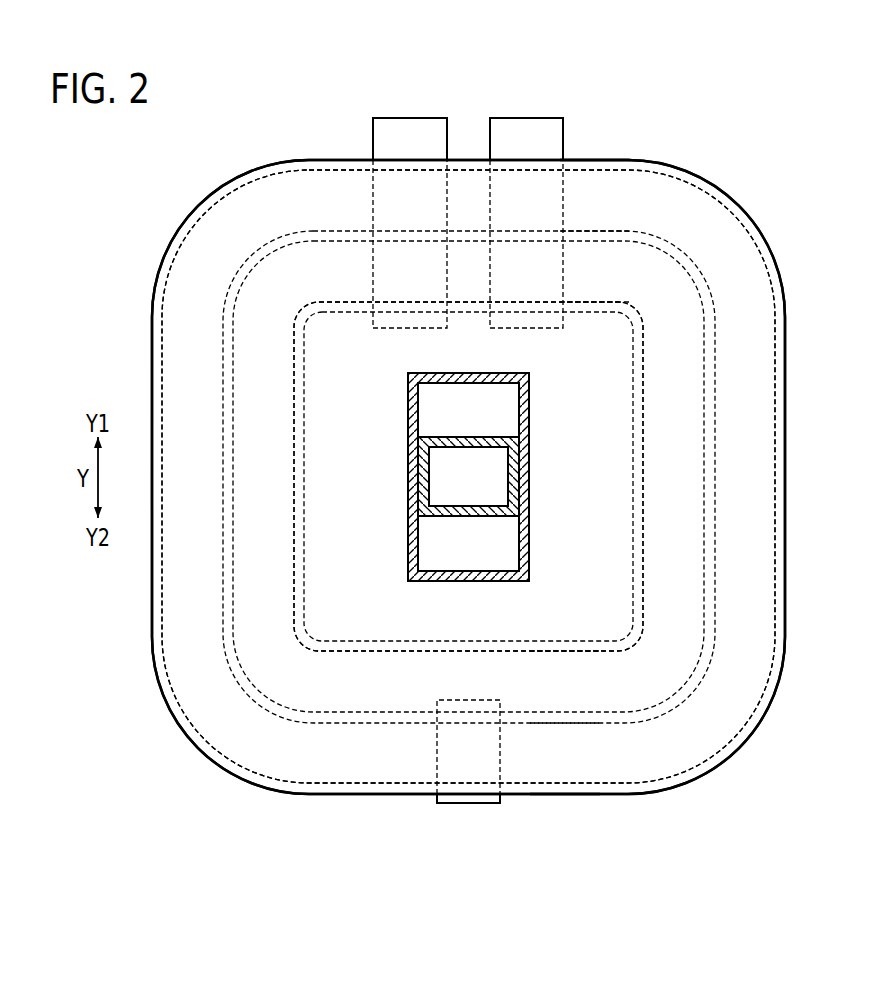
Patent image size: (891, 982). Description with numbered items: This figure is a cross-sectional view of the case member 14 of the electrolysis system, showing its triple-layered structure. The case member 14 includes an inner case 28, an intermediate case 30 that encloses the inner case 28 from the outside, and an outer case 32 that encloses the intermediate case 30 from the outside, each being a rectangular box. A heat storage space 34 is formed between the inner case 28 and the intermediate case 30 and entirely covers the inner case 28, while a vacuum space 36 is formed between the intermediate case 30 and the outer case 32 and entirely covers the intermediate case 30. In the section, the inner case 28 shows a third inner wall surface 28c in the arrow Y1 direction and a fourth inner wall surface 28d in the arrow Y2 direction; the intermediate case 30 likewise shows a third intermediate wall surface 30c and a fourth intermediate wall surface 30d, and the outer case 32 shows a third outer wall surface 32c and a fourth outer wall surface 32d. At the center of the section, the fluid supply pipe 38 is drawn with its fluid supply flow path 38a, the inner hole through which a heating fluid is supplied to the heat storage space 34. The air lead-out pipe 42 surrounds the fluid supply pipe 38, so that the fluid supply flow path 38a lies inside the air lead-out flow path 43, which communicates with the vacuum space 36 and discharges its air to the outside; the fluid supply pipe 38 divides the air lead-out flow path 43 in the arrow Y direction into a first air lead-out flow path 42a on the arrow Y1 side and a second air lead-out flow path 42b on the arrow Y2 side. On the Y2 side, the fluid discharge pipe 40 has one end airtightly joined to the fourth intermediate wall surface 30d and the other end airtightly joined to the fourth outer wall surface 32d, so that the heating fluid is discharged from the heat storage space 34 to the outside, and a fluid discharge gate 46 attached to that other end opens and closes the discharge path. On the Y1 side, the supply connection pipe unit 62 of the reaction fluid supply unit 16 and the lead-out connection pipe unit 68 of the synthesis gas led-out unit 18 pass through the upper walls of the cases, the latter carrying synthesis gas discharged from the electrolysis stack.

The case member 14 is at (703, 144).
The reaction fluid supply unit 16 is at (387, 98).
The synthesis gas led-out unit 18 is at (580, 101).
The inner case 28 is at (645, 358).
The third inner wall surface 28c is at (593, 302).
The fourth inner wall surface 28d is at (568, 652).
The intermediate case 30 is at (718, 422).
The third intermediate wall surface 30c is at (593, 231).
The fourth intermediate wall surface 30d is at (563, 723).
The outer case 32 is at (788, 507).
The third outer wall surface 32c is at (593, 160).
The fourth outer wall surface 32d is at (563, 794).
The heat storage space 34 is at (682, 545).
The vacuum space 36 is at (745, 655).
The fluid supply pipe 38 is at (442, 436).
The fluid supply flow path 38a is at (493, 477).
The fluid discharge pipe 40 is at (437, 764).
The air lead-out pipe 42 is at (443, 580).
The first air lead-out flow path 42a is at (508, 408).
The second air lead-out flow path 42b is at (508, 545).
The air lead-out flow path 43 is at (523, 477).
The fluid discharge gate 46 is at (457, 803).
The supply connection pipe unit 62 is at (423, 118).
The lead-out connection pipe unit 68 is at (540, 118).